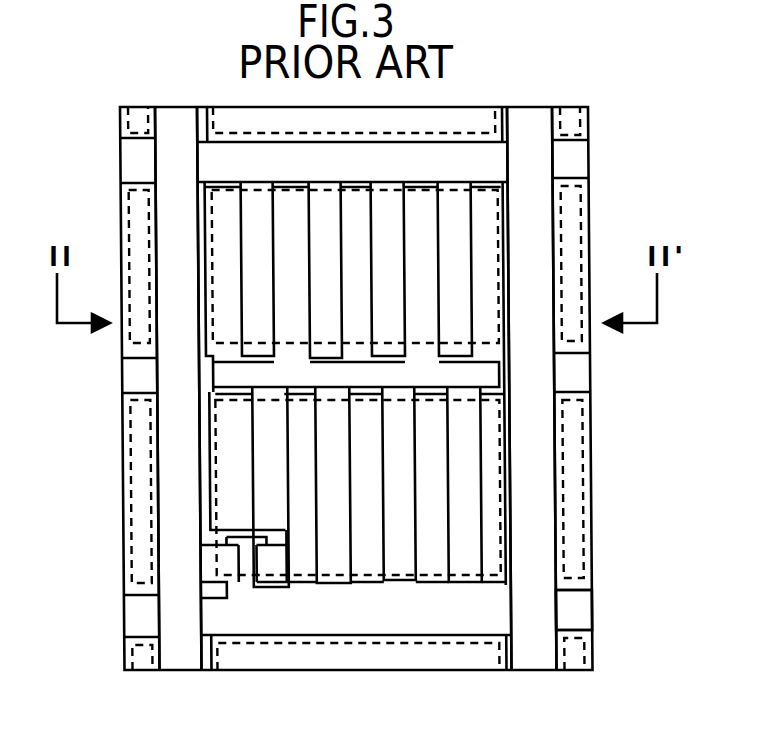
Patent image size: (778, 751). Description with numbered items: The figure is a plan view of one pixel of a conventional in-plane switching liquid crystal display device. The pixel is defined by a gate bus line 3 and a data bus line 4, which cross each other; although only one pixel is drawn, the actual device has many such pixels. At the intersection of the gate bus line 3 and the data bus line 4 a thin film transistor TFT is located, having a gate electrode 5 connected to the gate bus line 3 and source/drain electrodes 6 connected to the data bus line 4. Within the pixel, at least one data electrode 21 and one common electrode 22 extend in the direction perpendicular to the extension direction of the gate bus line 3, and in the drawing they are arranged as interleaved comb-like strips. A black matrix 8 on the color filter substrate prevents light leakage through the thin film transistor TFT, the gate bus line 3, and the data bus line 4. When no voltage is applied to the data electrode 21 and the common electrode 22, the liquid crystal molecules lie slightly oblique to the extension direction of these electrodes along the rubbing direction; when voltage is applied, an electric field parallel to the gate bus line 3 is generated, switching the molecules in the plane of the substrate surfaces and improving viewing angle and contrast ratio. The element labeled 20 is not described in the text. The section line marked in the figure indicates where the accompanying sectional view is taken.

The gate bus line 3 is at (580, 617).
The data bus line 4 is at (178, 652).
The gate electrode 5 is at (233, 588).
The source/drain electrodes 6 is at (218, 561).
The black matrix 8 is at (497, 200).
The data line 20 is at (577, 371).
The data electrode 21 is at (308, 575).
The common electrode 22 is at (370, 570).
The thin film transistor TFT is at (243, 592).